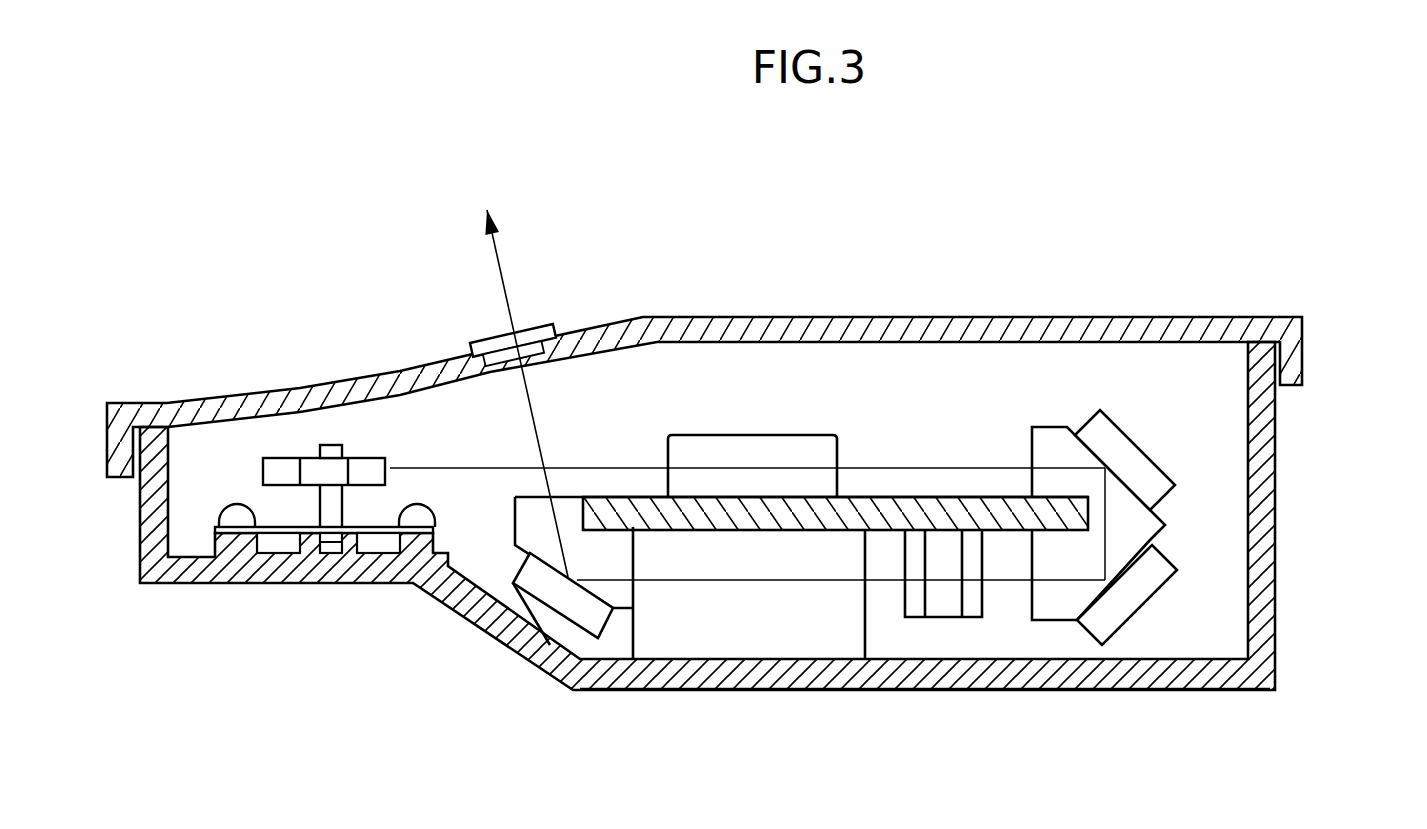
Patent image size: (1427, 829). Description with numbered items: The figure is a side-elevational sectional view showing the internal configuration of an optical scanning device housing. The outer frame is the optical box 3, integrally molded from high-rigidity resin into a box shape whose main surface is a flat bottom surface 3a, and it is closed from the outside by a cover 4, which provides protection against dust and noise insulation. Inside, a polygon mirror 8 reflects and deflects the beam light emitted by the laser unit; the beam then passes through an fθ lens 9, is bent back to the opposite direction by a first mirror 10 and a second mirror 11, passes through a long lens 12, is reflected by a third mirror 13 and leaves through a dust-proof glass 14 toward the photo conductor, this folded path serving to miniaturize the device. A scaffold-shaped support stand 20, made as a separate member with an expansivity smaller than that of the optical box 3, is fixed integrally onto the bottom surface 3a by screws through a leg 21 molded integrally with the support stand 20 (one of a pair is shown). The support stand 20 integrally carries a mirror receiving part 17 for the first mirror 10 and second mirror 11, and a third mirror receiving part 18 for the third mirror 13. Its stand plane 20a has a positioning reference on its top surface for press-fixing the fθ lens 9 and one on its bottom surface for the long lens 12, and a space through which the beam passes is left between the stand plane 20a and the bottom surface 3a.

The optical box 3 is at (1295, 477).
The bottom surface 3a is at (898, 685).
The cover 4 is at (698, 323).
The polygon mirror 8 is at (285, 473).
The fθ lens 9 is at (810, 438).
The first mirror 10 is at (1133, 440).
The second mirror 11 is at (1137, 598).
The long lens 12 is at (977, 612).
The third mirror 13 is at (561, 608).
The dust-proof glass 14 is at (487, 338).
The mirror receiving part 17 is at (1055, 428).
The third mirror receiving part 18 is at (528, 535).
The support stand 20 is at (978, 503).
The stand plane 20a is at (935, 500).
The leg 21 is at (740, 634).